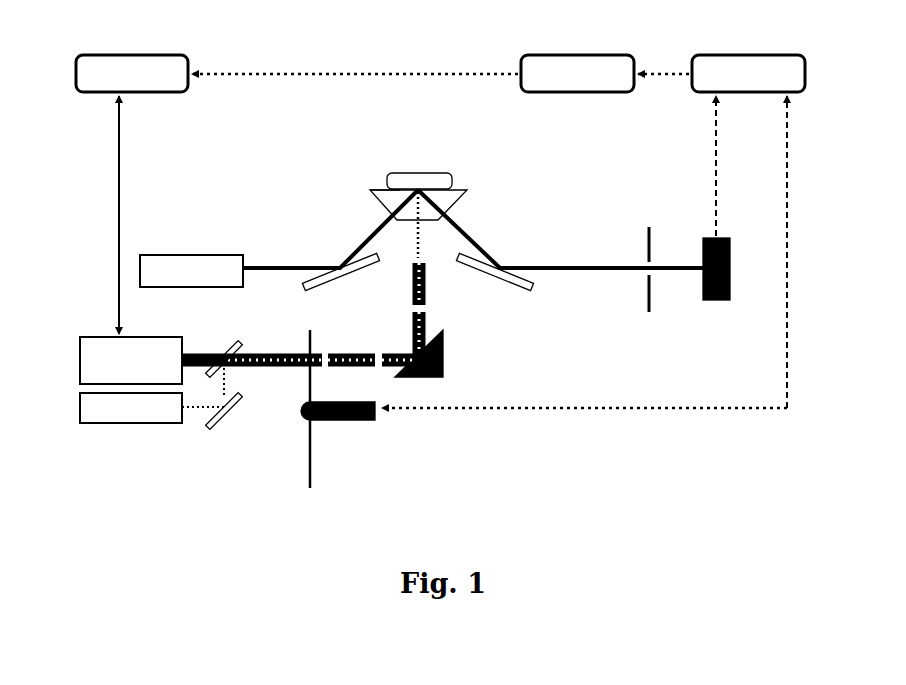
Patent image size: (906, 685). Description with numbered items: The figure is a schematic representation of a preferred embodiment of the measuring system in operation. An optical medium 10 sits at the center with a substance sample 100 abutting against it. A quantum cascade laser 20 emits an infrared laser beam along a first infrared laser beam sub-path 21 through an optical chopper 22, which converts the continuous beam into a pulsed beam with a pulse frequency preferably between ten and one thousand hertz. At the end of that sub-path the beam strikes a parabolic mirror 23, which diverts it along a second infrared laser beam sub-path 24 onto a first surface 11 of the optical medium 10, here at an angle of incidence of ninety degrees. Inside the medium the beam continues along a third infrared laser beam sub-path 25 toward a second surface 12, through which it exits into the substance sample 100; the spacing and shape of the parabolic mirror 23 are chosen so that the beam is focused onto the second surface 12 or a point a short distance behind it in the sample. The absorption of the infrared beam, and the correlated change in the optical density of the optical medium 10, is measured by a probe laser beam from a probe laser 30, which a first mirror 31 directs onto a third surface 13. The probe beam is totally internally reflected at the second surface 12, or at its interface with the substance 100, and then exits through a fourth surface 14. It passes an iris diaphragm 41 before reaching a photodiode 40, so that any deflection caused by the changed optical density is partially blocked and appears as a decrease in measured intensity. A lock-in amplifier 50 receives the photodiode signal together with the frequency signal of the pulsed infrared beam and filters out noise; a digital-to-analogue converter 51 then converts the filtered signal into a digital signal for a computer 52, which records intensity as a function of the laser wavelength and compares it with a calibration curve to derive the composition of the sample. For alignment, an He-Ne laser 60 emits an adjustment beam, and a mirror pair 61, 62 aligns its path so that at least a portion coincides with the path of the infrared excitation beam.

The substance sample 100 is at (430, 178).
The optical medium 10 is at (453, 190).
The first surface 11 is at (412, 226).
The second surface 12 is at (378, 188).
The third surface 13 is at (380, 205).
The fourth surface 14 is at (455, 207).
The quantum cascade laser 20 is at (88, 355).
The first infrared laser beam sub-path 21 is at (267, 368).
The optical chopper 22 is at (352, 422).
The parabolic mirror 23 is at (433, 378).
The second infrared laser beam sub-path 24 is at (413, 318).
The third infrared laser beam sub-path 25 is at (443, 230).
The probe laser 30 is at (182, 268).
The first mirror 31 is at (300, 290).
The photodiode 40 is at (717, 302).
The iris diaphragm 41 is at (649, 227).
The lock-in amplifier 50 is at (738, 72).
The digital-to-analogue converter 51 is at (566, 72).
The computer 52 is at (126, 72).
The He-Ne laser 60 is at (140, 413).
The mirror 61 is at (223, 413).
The mirror 62 is at (230, 343).